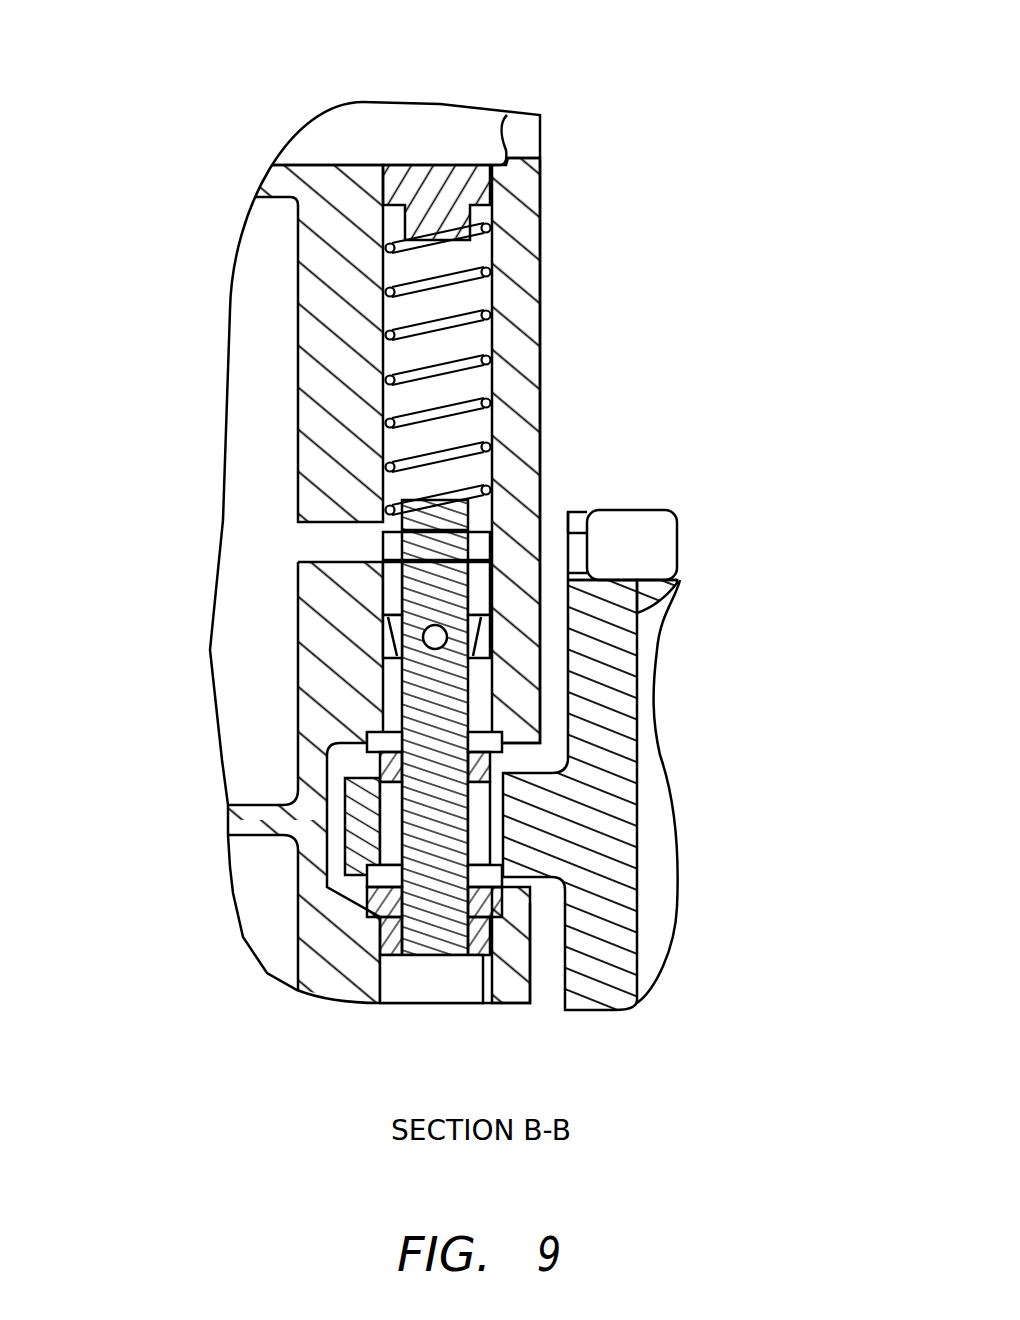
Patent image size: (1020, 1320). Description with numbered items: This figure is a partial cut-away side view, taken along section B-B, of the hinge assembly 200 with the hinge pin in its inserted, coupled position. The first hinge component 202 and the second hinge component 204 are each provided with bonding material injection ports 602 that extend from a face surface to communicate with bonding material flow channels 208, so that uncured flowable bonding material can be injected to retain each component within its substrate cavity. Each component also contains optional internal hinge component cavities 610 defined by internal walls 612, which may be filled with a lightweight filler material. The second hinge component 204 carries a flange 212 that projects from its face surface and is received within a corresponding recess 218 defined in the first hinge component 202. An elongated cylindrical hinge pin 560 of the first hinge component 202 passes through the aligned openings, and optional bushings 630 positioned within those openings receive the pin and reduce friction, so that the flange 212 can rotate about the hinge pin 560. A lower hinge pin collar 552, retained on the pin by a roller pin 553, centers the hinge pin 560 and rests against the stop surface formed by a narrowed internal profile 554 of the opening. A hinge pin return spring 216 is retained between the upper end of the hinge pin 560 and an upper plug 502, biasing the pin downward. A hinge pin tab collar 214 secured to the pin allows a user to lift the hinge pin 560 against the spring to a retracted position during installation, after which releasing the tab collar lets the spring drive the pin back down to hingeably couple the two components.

The hinge assembly 200 is at (178, 43).
The first hinge component 202 is at (527, 372).
The second hinge component 204 is at (578, 518).
The bonding material flow channels 208 is at (378, 126).
The flange 212 is at (512, 828).
The hinge pin tab collar 214 is at (410, 550).
The hinge pin return spring 216 is at (453, 315).
The recess 218 is at (513, 892).
The upper plug 502 is at (430, 177).
The lower hinge pin collar 552 is at (397, 647).
The roller pin 553 is at (420, 635).
The narrowed internal profile 554 is at (383, 685).
The hinge pin 560 is at (437, 940).
The bonding material injection ports 602 is at (523, 140).
The internal hinge component cavities 610 is at (247, 285).
The internal walls 612 is at (282, 182).
The bushings 630 is at (368, 878).